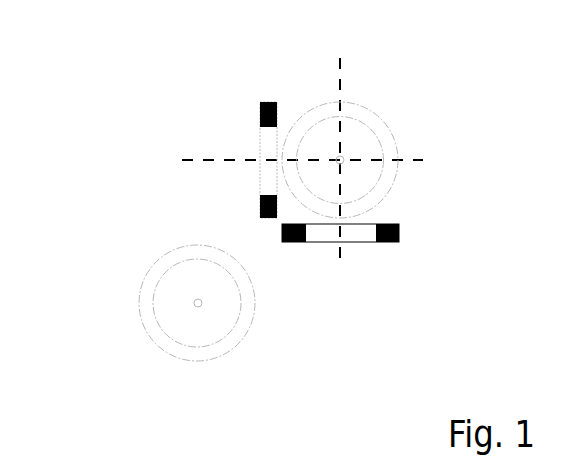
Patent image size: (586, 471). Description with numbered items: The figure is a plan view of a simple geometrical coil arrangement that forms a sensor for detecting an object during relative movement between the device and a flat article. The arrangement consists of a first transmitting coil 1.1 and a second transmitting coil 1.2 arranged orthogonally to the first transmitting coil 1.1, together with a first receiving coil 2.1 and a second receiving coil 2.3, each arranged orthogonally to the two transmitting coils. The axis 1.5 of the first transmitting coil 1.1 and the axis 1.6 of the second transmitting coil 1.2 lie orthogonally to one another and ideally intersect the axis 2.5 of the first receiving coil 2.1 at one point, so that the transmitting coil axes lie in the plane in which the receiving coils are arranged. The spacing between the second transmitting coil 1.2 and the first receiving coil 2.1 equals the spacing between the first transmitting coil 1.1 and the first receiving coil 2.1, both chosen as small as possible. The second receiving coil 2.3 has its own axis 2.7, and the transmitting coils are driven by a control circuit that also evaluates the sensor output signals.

The first transmitting coil 1.1 is at (258, 104).
The second transmitting coil 1.2 is at (398, 242).
The axis of the first transmitting coil 1.5 is at (202, 157).
The axis of the second transmitting coil 1.6 is at (345, 75).
The first receiving coil 2.1 is at (398, 175).
The axis of the first receiving coil 2.5 is at (344, 160).
The second receiving coil 2.3 is at (143, 327).
The axis of the second receiving coil 2.7 is at (202, 304).